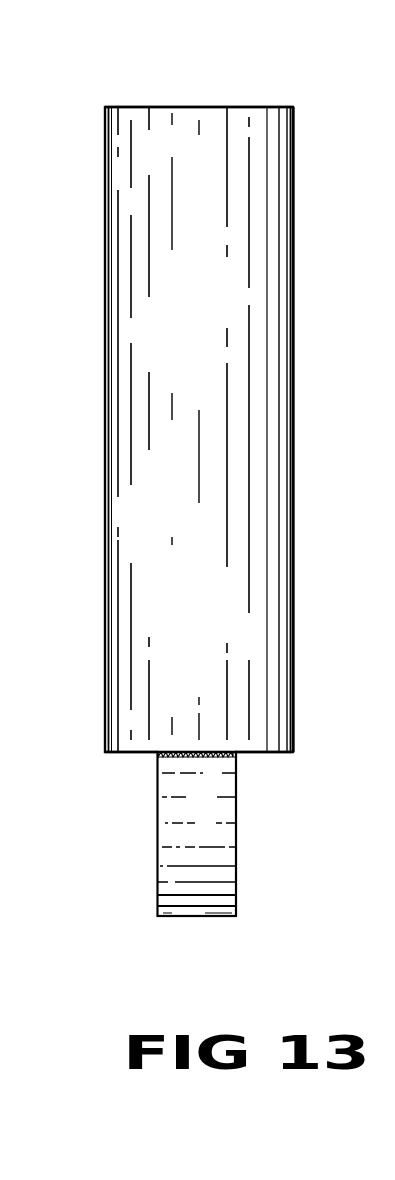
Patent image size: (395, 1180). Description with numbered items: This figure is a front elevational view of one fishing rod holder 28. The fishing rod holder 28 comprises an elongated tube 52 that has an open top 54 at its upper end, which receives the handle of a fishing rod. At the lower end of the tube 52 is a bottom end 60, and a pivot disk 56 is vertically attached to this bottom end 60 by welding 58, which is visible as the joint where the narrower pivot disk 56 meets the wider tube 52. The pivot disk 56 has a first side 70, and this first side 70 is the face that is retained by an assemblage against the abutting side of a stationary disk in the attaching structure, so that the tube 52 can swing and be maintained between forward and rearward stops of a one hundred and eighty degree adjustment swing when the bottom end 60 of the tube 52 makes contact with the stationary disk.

The fishing rod holder 28 is at (297, 262).
The tube 52 is at (298, 381).
The open top 54 is at (217, 107).
The pivot disk 56 is at (150, 858).
The welding 58 is at (220, 754).
The bottom end 60 is at (132, 753).
The first side 70 is at (237, 875).